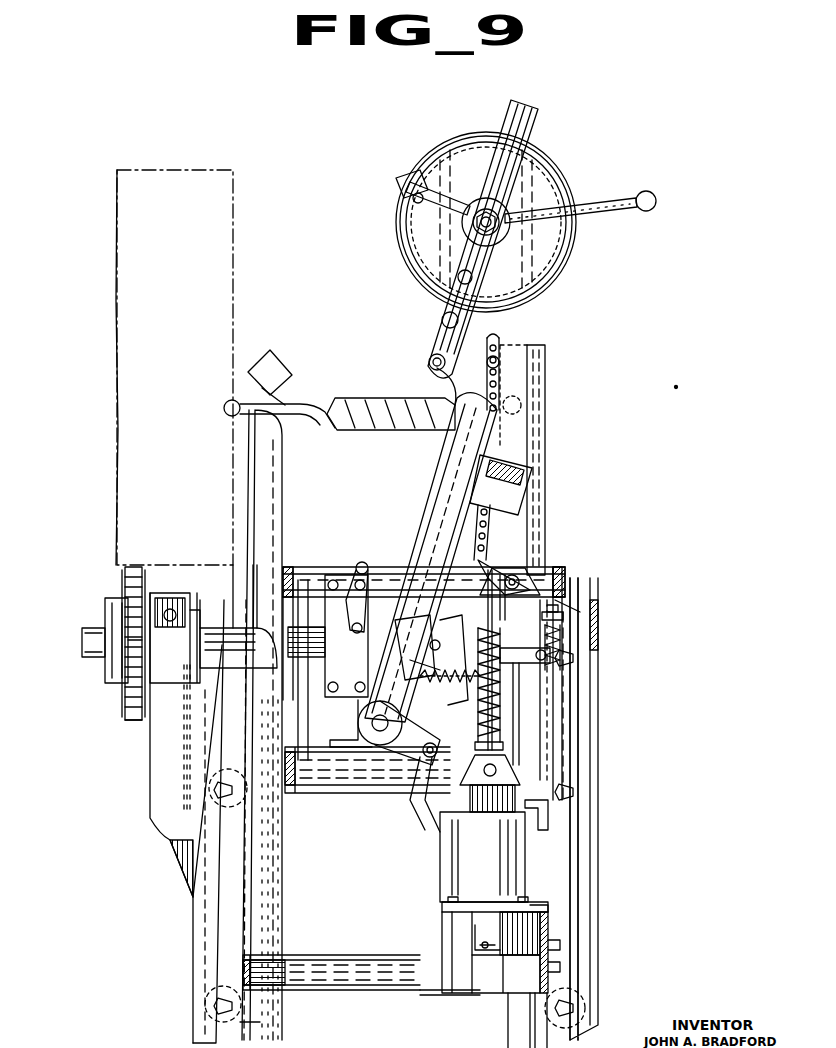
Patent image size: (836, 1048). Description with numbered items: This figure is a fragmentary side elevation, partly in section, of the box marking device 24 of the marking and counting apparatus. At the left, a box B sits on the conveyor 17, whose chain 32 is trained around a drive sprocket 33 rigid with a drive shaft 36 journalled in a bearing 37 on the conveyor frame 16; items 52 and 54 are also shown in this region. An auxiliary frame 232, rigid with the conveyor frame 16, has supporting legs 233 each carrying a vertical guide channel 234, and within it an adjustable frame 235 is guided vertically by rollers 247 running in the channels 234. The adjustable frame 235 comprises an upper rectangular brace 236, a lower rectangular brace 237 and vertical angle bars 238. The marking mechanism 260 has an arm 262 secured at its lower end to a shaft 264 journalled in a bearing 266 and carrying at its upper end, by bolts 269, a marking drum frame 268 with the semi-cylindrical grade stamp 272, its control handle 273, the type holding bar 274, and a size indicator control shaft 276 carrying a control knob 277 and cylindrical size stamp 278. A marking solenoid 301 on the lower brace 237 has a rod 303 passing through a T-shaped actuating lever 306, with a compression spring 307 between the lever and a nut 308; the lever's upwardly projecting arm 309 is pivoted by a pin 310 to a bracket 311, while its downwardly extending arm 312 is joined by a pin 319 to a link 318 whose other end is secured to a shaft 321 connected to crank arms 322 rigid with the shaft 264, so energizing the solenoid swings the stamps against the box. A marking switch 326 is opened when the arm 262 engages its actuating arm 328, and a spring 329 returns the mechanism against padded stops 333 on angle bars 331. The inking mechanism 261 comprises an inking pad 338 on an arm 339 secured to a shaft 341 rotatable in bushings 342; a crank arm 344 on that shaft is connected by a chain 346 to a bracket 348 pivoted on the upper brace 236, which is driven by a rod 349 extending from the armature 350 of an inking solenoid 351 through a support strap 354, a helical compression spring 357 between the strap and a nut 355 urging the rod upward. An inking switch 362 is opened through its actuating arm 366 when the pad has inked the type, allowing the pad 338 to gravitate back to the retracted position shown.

The box B is at (235, 170).
The conveyor frame 16 is at (150, 792).
The conveyor 17 is at (122, 579).
The marking device 24 is at (532, 305).
The chain 32 is at (127, 706).
The drive sprocket 33 is at (122, 630).
The drive shaft 36 is at (95, 640).
The bearing 37 is at (173, 692).
The roller 52 is at (224, 410).
The channel guide 54 is at (285, 484).
The auxiliary frame 232 is at (600, 718).
The supporting leg 233 is at (590, 740).
The vertical guide channel 234 is at (585, 758).
The adjustable frame 235 is at (597, 635).
The upper rectangular brace 236 is at (575, 578).
The lower rectangular brace 237 is at (335, 968).
The vertical angle bar 238 is at (583, 608).
The roller 247 is at (604, 668).
The marking mechanism 260 is at (565, 170).
The inking mechanism 261 is at (350, 394).
The arm 262 is at (472, 455).
The shaft 264 is at (372, 723).
The bearing 266 is at (358, 712).
The marking drum frame 268 is at (532, 107).
The bolt 269 is at (457, 276).
The grade stamp 272 is at (445, 145).
The control handle 273 is at (610, 203).
The type holding bar 274 is at (410, 180).
The size indicator control shaft 276 is at (478, 224).
The control knob 277 is at (500, 238).
The size stamp 278 is at (568, 250).
The marking solenoid 301 is at (520, 942).
The rod 303 is at (520, 712).
The T-shaped actuating lever 306 is at (480, 692).
The compression spring 307 is at (565, 650).
The nut 308 is at (545, 620).
The upwardly projecting arm 309 is at (430, 650).
The pin 310 is at (400, 645).
The bracket 311 is at (438, 628).
The downwardly extending arm 312 is at (405, 668).
The link 318 is at (422, 752).
The pin 319 is at (475, 745).
The shaft 321 is at (430, 795).
The crank arm 322 is at (420, 760).
The marking switch 326 is at (372, 575).
The actuating arm 328 is at (350, 568).
The spring 329 is at (465, 668).
The angle bar 331 is at (525, 522).
The padded stop 333 is at (505, 480).
The inking pad 338 is at (270, 372).
The arm 339 is at (375, 425).
The shaft 341 is at (430, 367).
The bushing 342 is at (442, 320).
The crank arm 344 is at (500, 338).
The chain 346 is at (503, 364).
The bracket 348 is at (515, 540).
The rod 349 is at (515, 568).
The armature 350 is at (460, 828).
The inking solenoid 351 is at (470, 862).
The support strap 354 is at (530, 812).
The nut 355 is at (487, 594).
The helical compression spring 357 is at (499, 612).
The inking switch 362 is at (545, 420).
The actuating arm 366 is at (500, 386).